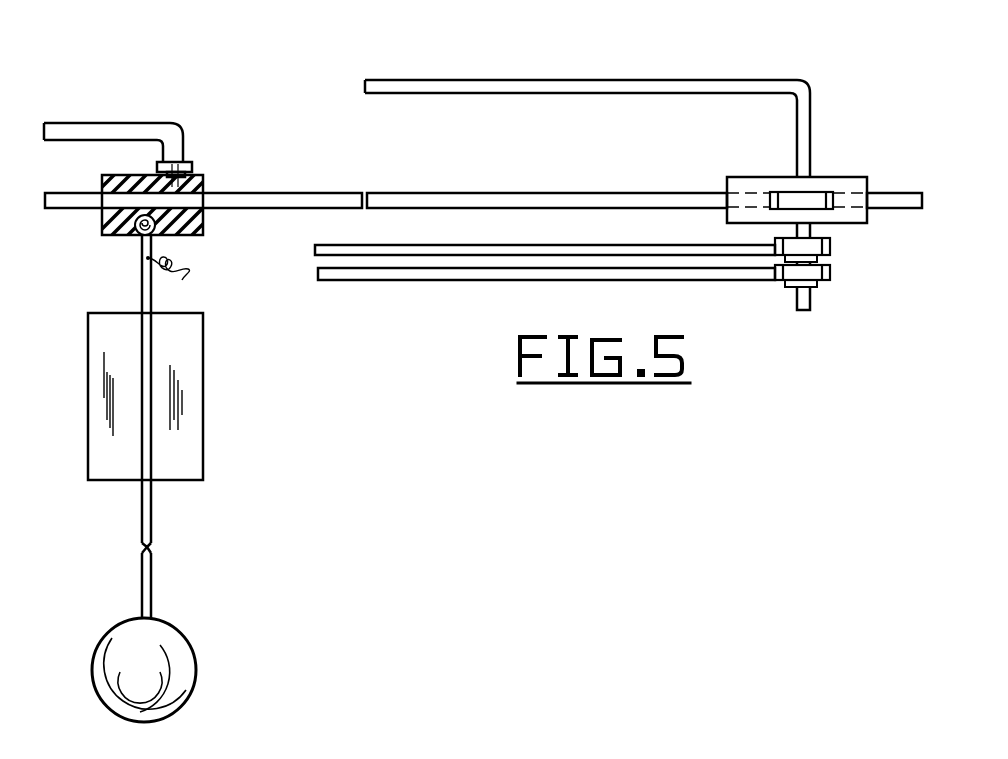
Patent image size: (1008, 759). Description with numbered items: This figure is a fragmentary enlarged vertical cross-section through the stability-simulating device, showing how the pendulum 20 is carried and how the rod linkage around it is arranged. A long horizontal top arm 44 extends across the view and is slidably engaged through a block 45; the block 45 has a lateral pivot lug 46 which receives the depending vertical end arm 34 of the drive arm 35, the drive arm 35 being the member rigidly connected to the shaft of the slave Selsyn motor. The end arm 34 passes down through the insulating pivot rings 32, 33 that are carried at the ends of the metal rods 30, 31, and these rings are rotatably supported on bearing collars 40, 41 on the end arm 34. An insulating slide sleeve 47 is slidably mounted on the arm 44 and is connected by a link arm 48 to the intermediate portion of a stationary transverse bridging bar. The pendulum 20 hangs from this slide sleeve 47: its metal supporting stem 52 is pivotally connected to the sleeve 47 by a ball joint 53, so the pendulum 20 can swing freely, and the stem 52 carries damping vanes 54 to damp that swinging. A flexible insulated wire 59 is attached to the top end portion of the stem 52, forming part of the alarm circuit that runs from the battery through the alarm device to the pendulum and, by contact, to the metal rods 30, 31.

The pendulum 20 is at (167, 625).
The metal rod 30 is at (418, 281).
The metal rod 31 is at (517, 248).
The insulating pivot ring 32 is at (830, 272).
The insulating pivot ring 33 is at (830, 245).
The depending vertical end arm 34 is at (810, 300).
The drive arm 35 is at (575, 80).
The bearing collar 40 is at (785, 286).
The bearing collar 41 is at (817, 258).
The horizontal top arm 44 is at (433, 193).
The block 45 is at (740, 177).
The lateral pivot lug 46 is at (817, 197).
The insulating slide sleeve 47 is at (205, 232).
The link arm 48 is at (112, 127).
The supporting stem 52 is at (152, 521).
The ball joint 53 is at (138, 237).
The damping vanes 54 is at (203, 437).
The flexible insulated wire 59 is at (187, 281).